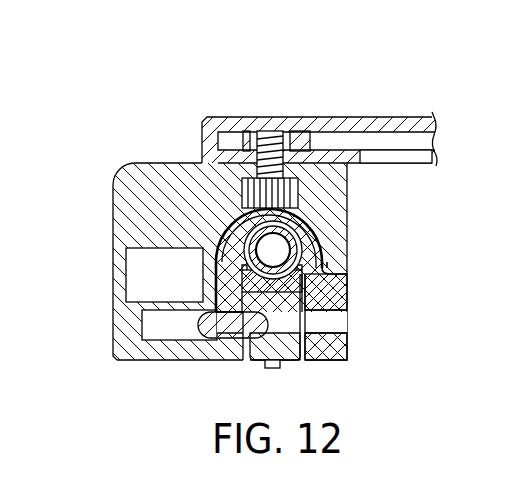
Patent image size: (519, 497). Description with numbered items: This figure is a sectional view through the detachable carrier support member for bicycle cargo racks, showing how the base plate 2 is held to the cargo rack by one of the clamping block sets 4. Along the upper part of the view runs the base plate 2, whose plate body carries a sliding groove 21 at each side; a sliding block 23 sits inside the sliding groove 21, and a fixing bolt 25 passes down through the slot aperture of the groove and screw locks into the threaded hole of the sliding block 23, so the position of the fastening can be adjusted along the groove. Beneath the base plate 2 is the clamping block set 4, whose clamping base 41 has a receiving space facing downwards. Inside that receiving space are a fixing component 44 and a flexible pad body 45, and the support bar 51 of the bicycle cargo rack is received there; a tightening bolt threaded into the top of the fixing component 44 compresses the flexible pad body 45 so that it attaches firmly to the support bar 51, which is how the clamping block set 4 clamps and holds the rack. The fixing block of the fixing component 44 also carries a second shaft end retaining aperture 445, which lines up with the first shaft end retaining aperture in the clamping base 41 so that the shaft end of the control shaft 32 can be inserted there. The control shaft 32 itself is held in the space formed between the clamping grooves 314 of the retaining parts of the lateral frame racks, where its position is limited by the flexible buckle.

The base plate 2 is at (357, 117).
The sliding groove 21 is at (403, 147).
The sliding block 23 is at (312, 137).
The fixing bolt 25 is at (268, 130).
The clamping block set 4 is at (108, 175).
The clamping base 41 is at (330, 213).
The support bar 51 is at (306, 236).
The flexible pad body 45 is at (334, 273).
The fixing component 44 is at (305, 297).
The second shaft end retaining aperture 445 is at (305, 323).
The clamping groove 314 is at (158, 325).
The control shaft 32 is at (204, 326).